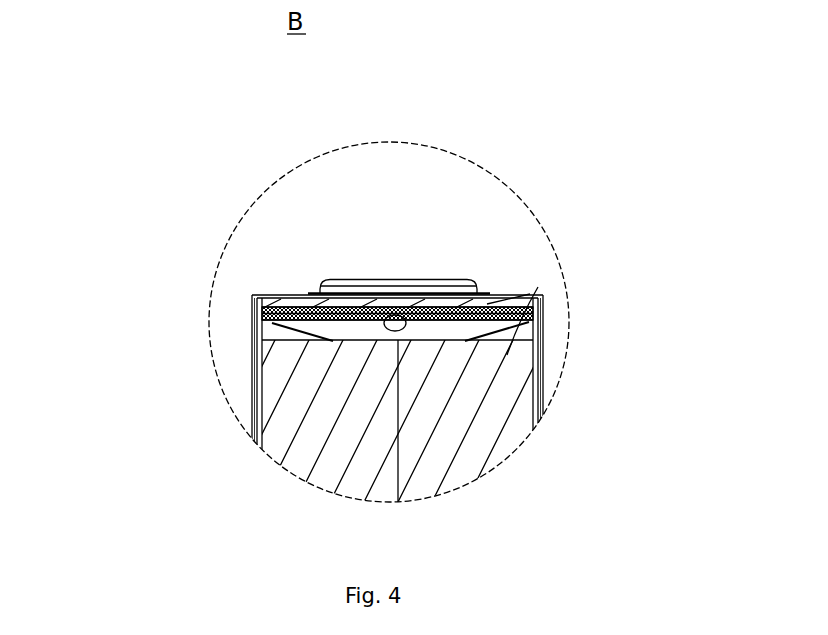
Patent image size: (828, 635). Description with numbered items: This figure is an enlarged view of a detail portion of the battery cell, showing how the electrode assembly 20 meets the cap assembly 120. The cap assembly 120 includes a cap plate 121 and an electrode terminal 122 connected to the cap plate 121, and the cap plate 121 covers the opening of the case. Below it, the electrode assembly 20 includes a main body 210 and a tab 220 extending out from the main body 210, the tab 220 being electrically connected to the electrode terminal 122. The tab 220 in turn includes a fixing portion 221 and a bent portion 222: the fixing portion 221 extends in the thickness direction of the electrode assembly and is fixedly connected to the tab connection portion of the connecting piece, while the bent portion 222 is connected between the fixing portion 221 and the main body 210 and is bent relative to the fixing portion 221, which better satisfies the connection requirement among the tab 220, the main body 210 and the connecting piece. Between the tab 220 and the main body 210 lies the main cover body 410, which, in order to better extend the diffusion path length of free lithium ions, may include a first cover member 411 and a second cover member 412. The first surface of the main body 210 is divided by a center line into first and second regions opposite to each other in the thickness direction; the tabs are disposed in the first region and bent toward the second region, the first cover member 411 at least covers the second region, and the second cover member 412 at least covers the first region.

The electrode assembly 20 is at (95, 370).
The main body 210 is at (295, 426).
The tab 220 is at (275, 323).
The fixing portion 221 is at (528, 296).
The bent portion 222 is at (515, 342).
The cap assembly 120 is at (113, 190).
The cap plate 121 is at (300, 299).
The electrode terminal 122 is at (362, 281).
The main cover body 410 is at (555, 78).
The first cover member 411 is at (458, 333).
The second cover member 412 is at (489, 307).